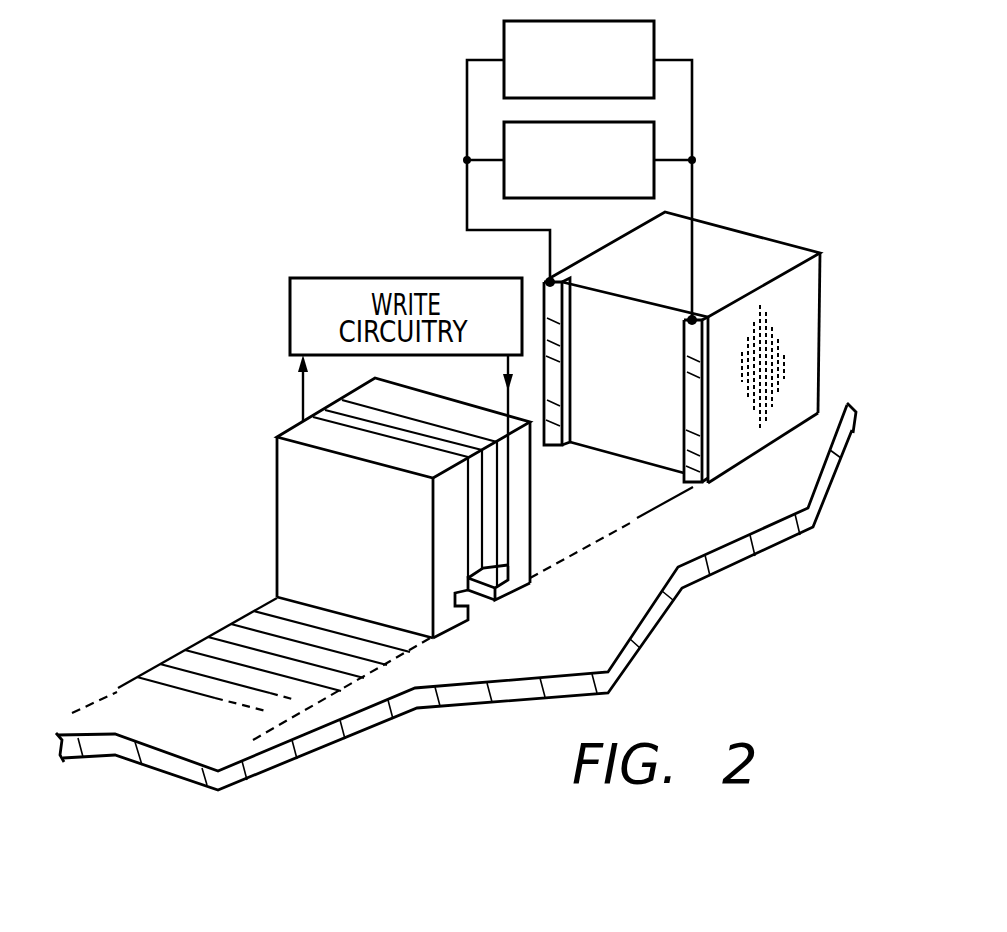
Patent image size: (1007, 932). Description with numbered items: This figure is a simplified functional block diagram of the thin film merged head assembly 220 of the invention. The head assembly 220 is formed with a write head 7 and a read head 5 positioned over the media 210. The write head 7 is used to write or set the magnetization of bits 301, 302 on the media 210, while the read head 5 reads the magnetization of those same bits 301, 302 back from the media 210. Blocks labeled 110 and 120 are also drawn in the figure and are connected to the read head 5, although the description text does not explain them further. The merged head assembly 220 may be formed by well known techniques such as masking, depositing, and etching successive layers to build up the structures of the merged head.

The read head 5 is at (761, 221).
The write head 7 is at (270, 422).
The current source 110 is at (503, 137).
The current sensor 120 is at (503, 36).
The media 210 is at (617, 607).
The head assembly 220 is at (352, 216).
The bit 301 is at (180, 666).
The bit 302 is at (230, 645).